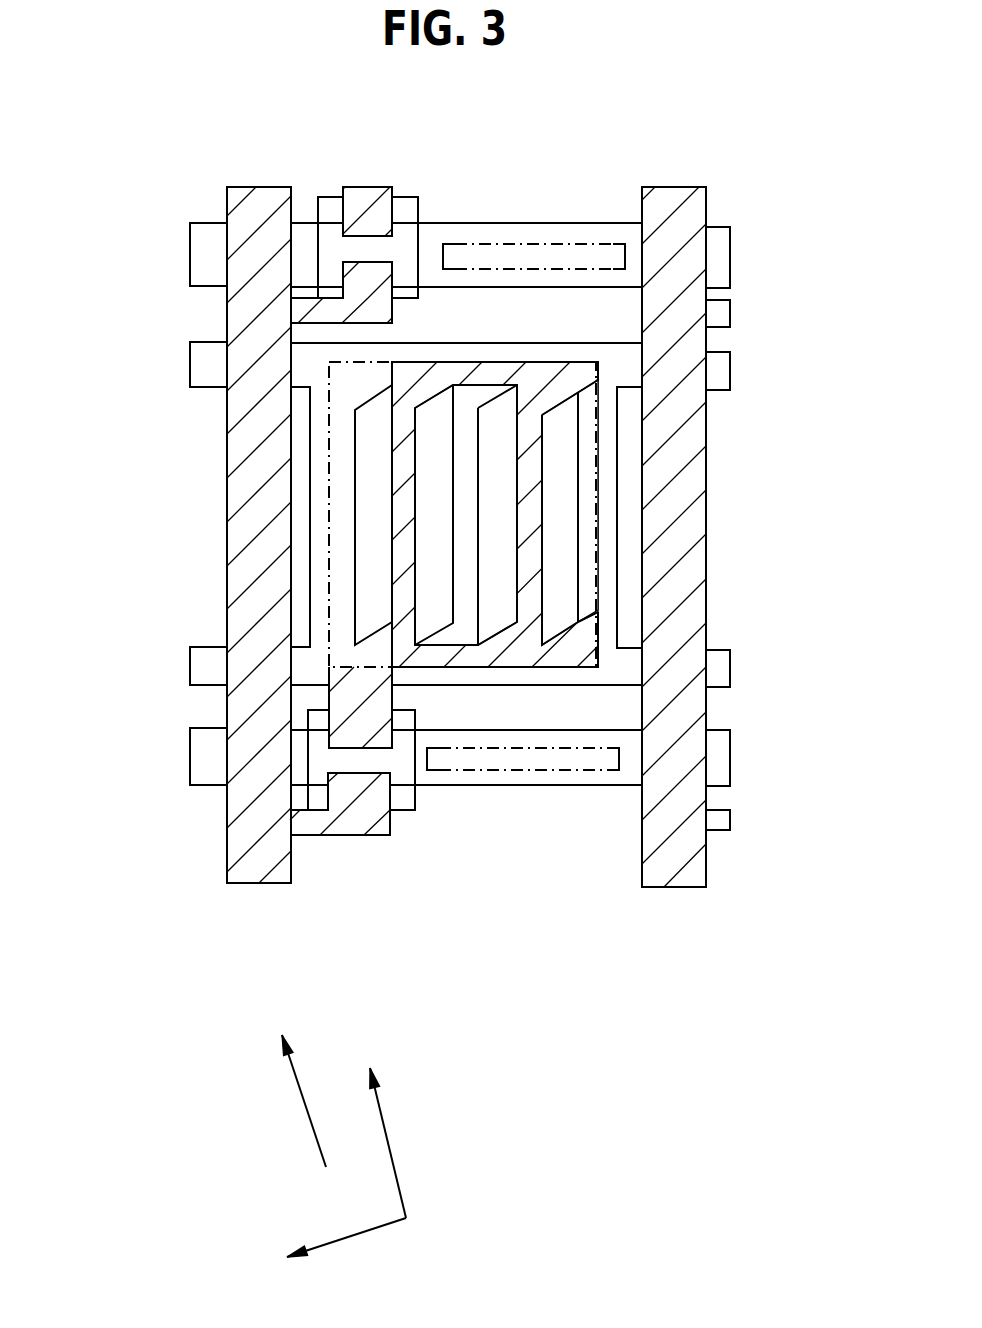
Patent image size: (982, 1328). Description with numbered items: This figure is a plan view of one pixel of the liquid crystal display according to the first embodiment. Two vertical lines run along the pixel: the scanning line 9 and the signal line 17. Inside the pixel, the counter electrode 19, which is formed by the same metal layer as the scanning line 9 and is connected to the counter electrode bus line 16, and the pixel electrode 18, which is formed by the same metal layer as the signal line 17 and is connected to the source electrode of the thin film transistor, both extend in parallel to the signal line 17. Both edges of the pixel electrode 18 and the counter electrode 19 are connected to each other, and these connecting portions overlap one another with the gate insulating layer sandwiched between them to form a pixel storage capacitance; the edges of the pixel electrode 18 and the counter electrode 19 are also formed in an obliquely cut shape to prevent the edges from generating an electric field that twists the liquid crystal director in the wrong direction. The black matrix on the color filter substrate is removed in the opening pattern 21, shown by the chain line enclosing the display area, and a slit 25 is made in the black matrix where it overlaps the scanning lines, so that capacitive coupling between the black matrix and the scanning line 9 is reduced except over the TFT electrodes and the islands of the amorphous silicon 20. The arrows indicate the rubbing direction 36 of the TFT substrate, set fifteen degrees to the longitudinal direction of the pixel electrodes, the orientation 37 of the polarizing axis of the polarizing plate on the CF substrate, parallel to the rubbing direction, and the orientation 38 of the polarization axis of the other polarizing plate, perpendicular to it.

The scanning line 9 is at (718, 757).
The counter electrode bus line 16 is at (198, 660).
The signal line 17 is at (257, 883).
The pixel electrode 18 is at (542, 516).
The counter electrode 19 is at (453, 512).
The islands of the amorphous silicon 20 is at (404, 803).
The opening pattern 21 is at (558, 663).
The slit 25 is at (495, 242).
The rubbing direction 36 is at (307, 1120).
The orientation of the polarizing axis of the polarizing plate on the CF substrate 37 is at (392, 1143).
The orientation of the polarization axis of the polarizing plate 38 is at (367, 1232).